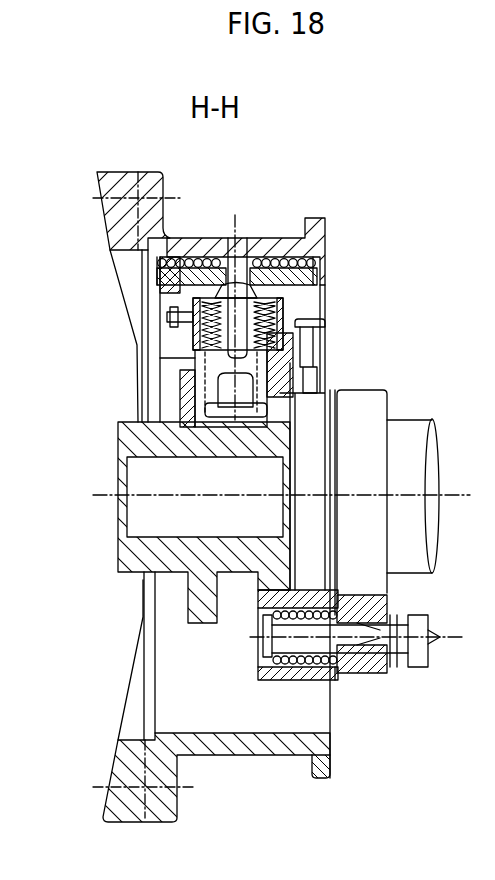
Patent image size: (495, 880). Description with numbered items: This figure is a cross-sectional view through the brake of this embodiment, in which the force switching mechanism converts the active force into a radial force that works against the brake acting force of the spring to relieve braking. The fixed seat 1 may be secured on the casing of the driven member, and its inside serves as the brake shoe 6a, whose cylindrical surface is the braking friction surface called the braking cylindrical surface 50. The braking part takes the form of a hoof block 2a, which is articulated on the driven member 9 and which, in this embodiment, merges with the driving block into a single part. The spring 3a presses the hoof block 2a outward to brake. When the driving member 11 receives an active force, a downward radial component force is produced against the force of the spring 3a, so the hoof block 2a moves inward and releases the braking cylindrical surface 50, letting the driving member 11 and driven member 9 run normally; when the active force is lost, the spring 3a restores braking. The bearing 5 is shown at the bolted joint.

The fixed seat 1 is at (187, 247).
The hoof block 2a is at (327, 268).
The spring 3a is at (190, 363).
The bearing 5 is at (357, 673).
The brake shoe 6a is at (262, 745).
The driven member 9 is at (148, 551).
The driving member 11 is at (360, 423).
The braking cylindrical surface 50 is at (300, 735).